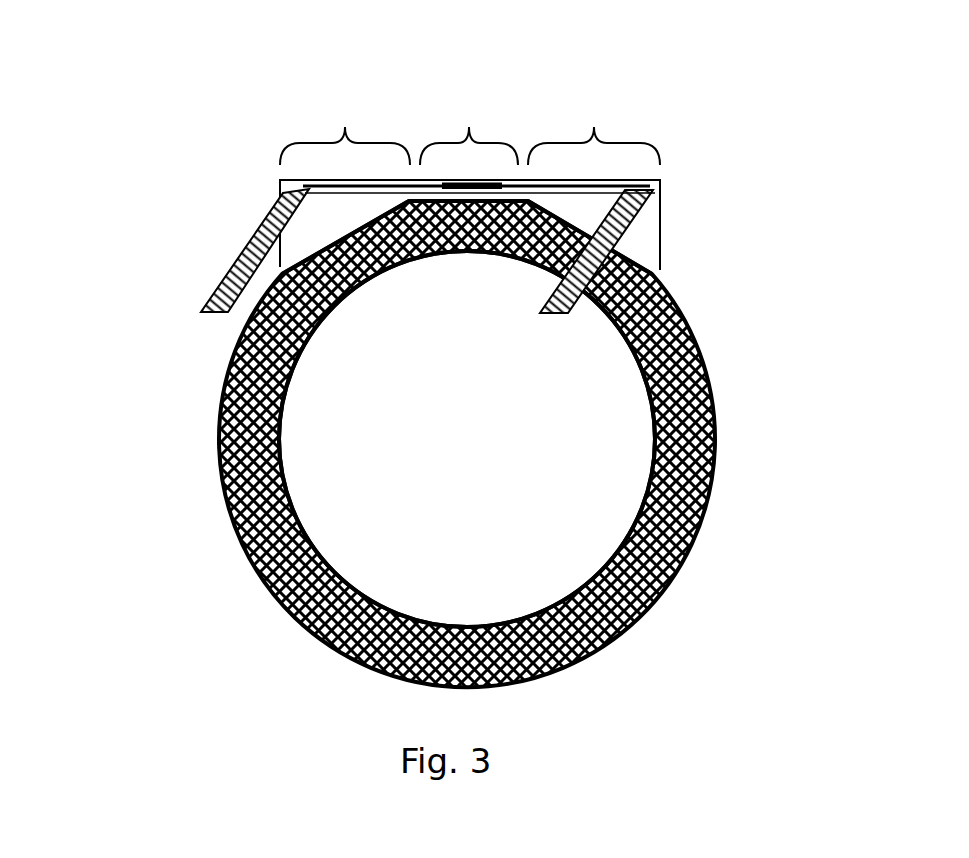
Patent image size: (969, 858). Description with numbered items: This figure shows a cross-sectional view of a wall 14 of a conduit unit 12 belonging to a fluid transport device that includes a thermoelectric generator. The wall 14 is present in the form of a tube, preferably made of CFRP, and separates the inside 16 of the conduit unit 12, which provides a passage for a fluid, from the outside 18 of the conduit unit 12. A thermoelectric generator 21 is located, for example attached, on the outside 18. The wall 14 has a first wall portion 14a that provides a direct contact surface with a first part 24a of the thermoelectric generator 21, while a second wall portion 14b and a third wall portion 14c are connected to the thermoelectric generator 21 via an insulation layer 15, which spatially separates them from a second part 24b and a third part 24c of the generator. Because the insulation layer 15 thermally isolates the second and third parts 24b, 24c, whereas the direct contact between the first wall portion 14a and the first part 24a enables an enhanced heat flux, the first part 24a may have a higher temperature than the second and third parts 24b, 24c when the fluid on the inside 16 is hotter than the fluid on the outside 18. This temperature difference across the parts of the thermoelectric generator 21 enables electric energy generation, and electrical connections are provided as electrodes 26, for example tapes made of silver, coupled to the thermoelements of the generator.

The conduit unit 12 is at (429, 345).
The wall 14 is at (527, 387).
The first wall portion 14a is at (479, 194).
The second wall portion 14b is at (333, 234).
The third wall portion 14c is at (577, 217).
The insulation layer 15 is at (298, 226).
The inside 16 is at (353, 500).
The outside 18 is at (509, 387).
The thermoelectric generator 21 is at (372, 188).
The first part 24a is at (469, 125).
The second part 24b is at (344, 125).
The third part 24c is at (594, 125).
The electrodes 26 is at (213, 300).